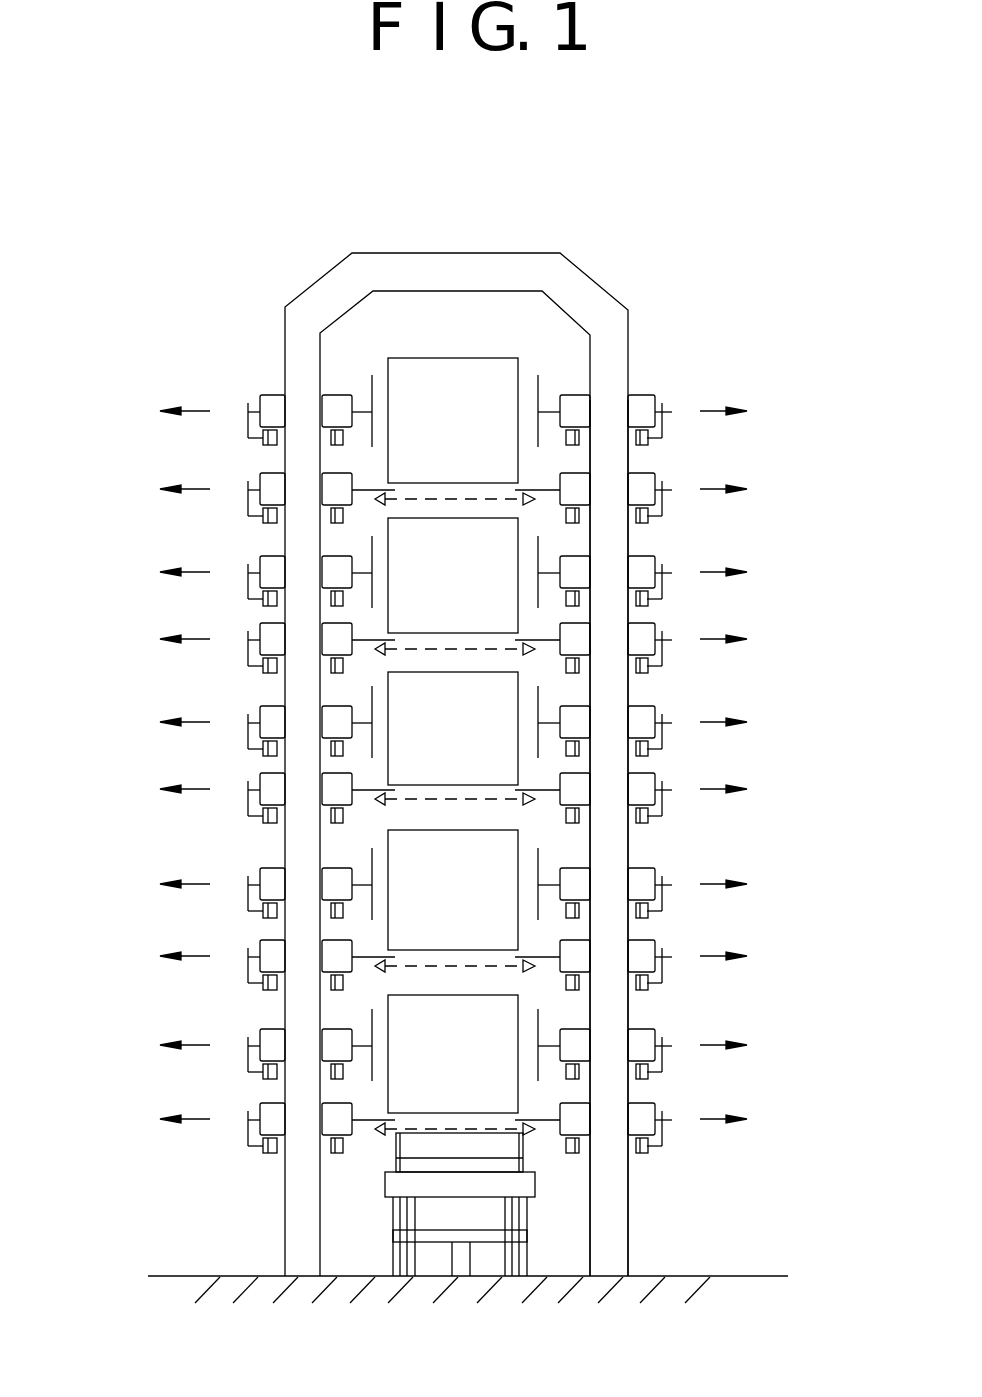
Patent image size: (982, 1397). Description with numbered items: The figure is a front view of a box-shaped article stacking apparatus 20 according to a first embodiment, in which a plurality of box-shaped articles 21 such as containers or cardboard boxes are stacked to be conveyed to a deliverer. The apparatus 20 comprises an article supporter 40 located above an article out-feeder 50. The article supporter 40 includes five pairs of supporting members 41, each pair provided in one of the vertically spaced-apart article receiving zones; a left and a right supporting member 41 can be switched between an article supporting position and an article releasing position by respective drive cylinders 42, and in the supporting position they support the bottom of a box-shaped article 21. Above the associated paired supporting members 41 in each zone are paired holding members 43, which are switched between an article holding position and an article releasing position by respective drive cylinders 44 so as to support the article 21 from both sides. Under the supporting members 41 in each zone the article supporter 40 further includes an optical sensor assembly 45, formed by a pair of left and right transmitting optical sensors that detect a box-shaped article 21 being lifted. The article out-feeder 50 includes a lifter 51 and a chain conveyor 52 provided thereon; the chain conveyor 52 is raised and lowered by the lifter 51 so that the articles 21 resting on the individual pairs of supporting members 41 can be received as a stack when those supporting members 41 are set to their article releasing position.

The box-shaped article stacking apparatus 20 is at (482, 701).
The box-shaped article 21 is at (478, 372).
The article supporter 40 is at (608, 373).
The supporting member 41 is at (377, 492).
The drive cylinder 42 is at (280, 520).
The holding member 43 is at (372, 380).
The drive cylinder 44 is at (278, 443).
The optical sensor assembly 45 is at (381, 507).
The article out-feeder 50 is at (548, 1180).
The lifter 51 is at (395, 1218).
The chain conveyor 52 is at (460, 1185).